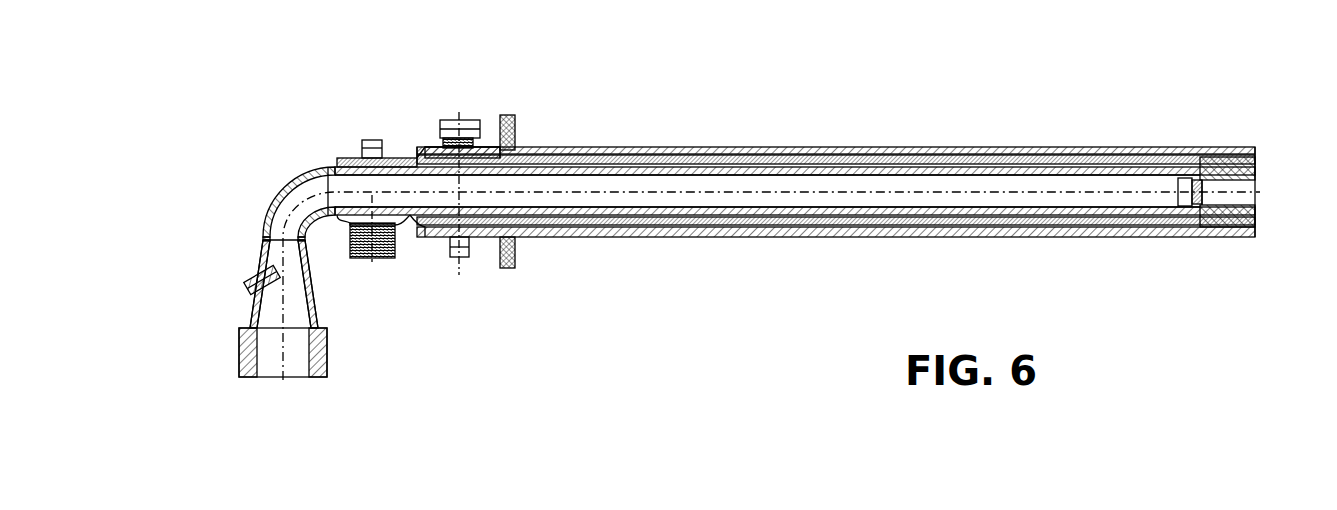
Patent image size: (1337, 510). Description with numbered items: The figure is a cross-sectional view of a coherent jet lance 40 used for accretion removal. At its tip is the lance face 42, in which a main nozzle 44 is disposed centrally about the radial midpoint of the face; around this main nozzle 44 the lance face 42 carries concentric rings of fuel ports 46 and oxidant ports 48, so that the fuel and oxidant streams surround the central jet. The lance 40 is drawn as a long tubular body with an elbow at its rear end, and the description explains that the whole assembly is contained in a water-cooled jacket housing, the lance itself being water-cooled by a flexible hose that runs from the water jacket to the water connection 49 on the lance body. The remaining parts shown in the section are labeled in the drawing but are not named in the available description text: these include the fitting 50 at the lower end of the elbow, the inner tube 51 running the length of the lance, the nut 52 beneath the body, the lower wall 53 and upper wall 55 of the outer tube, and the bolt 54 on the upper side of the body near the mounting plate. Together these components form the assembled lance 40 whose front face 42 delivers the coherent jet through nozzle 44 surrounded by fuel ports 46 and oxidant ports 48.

The coherent jet lance 40 is at (775, 234).
The lance face 42 is at (1245, 190).
The main nozzle 44 is at (1246, 186).
The fuel ports 46 is at (1254, 217).
The oxidant ports 48 is at (1254, 150).
The water connection 49 is at (460, 260).
The hose fitting 50 is at (283, 390).
The inner tube 51 is at (598, 186).
The nut 52 is at (373, 276).
The lower outer tube wall 53 is at (650, 210).
The bolt 54 is at (458, 110).
The upper outer tube wall 55 is at (744, 157).